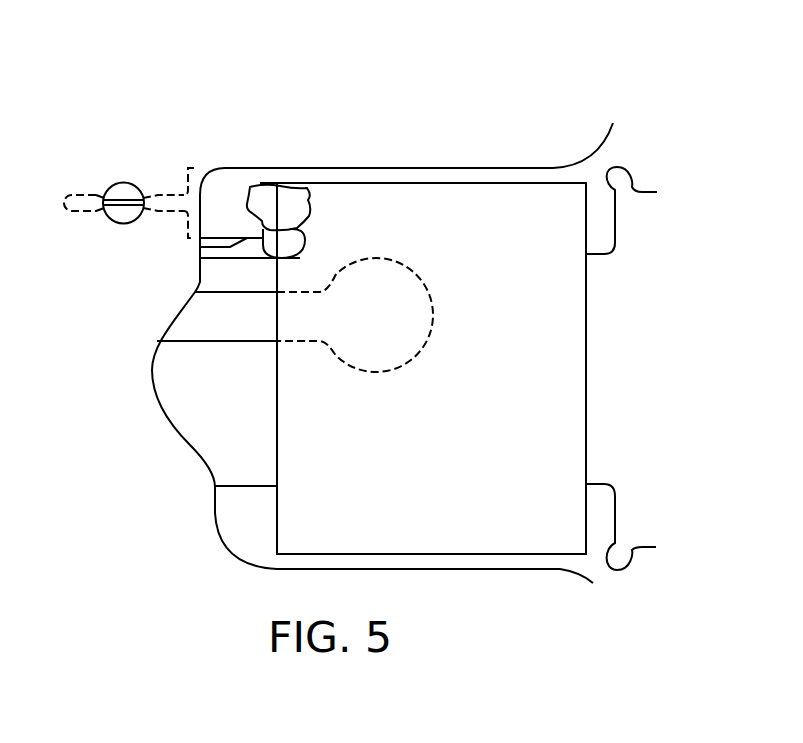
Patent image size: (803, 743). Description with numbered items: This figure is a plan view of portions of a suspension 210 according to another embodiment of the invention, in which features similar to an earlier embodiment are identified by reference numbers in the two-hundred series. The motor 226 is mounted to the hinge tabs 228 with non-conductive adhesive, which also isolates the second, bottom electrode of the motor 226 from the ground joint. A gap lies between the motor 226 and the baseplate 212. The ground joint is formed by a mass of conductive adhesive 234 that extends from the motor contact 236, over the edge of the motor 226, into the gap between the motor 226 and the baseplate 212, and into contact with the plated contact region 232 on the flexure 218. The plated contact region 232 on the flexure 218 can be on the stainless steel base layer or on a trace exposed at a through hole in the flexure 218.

The suspension 210 is at (542, 127).
The baseplate 212 is at (393, 168).
The flexure 218 is at (238, 187).
The motor 226 is at (565, 393).
The hinge tabs 228 is at (602, 505).
The plated contact region 232 is at (260, 185).
The conductive adhesive 234 is at (287, 207).
The motor contact 236 is at (200, 258).